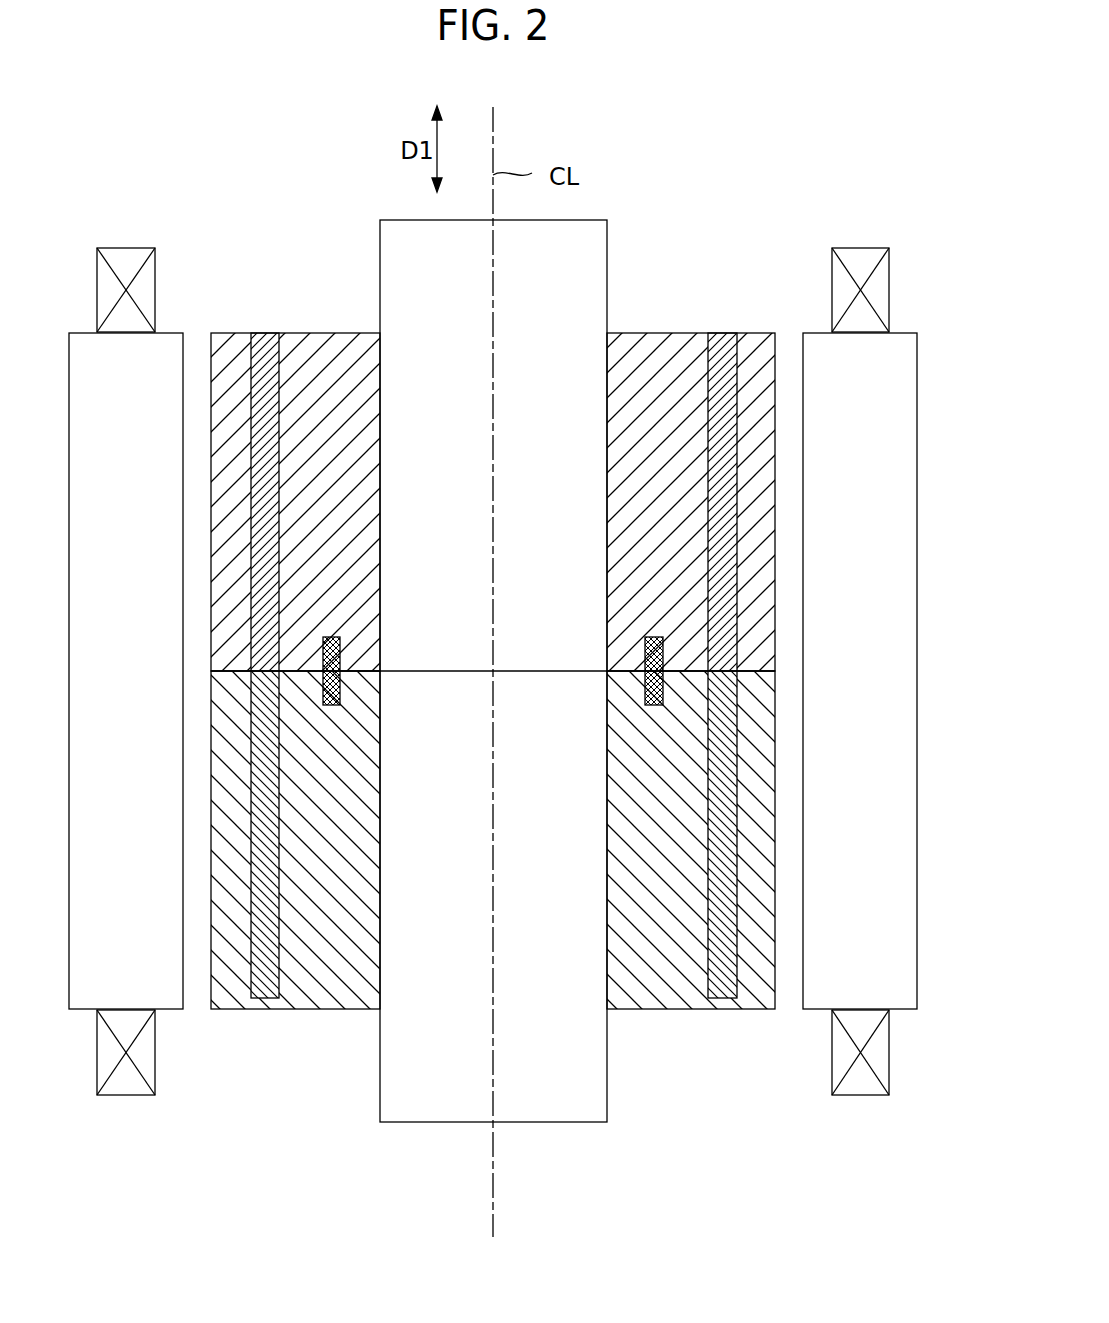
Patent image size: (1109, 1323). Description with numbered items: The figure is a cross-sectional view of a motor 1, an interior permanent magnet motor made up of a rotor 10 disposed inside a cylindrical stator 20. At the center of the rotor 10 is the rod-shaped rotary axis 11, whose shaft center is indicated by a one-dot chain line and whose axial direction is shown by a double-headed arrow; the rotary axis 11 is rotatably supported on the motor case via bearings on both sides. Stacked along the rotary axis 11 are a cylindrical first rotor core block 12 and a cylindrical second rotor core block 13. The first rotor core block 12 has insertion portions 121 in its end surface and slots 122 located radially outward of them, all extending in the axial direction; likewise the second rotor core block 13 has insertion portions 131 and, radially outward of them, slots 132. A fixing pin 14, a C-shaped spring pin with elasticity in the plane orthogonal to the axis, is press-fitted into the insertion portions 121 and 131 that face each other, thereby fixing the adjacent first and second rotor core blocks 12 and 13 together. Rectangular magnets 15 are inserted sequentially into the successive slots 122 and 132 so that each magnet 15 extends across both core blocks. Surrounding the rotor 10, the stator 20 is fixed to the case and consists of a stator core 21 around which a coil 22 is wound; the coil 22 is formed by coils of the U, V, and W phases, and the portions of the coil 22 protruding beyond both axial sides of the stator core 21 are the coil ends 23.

The motor 1 is at (808, 152).
The rotor 10 is at (724, 236).
The rotary axis 11 is at (607, 238).
The first rotor core block 12 is at (311, 332).
The insertion portion 121 is at (323, 660).
The slot 122 is at (262, 400).
The second rotor core block 13 is at (293, 1010).
The insertion portion 131 is at (323, 683).
The slot 132 is at (263, 815).
The fixing pin 14 is at (340, 637).
The magnet 15 is at (264, 347).
The stator 20 is at (948, 246).
The stator core 21 is at (917, 443).
The coil 22 is at (889, 277).
The coil end 23 is at (889, 312).